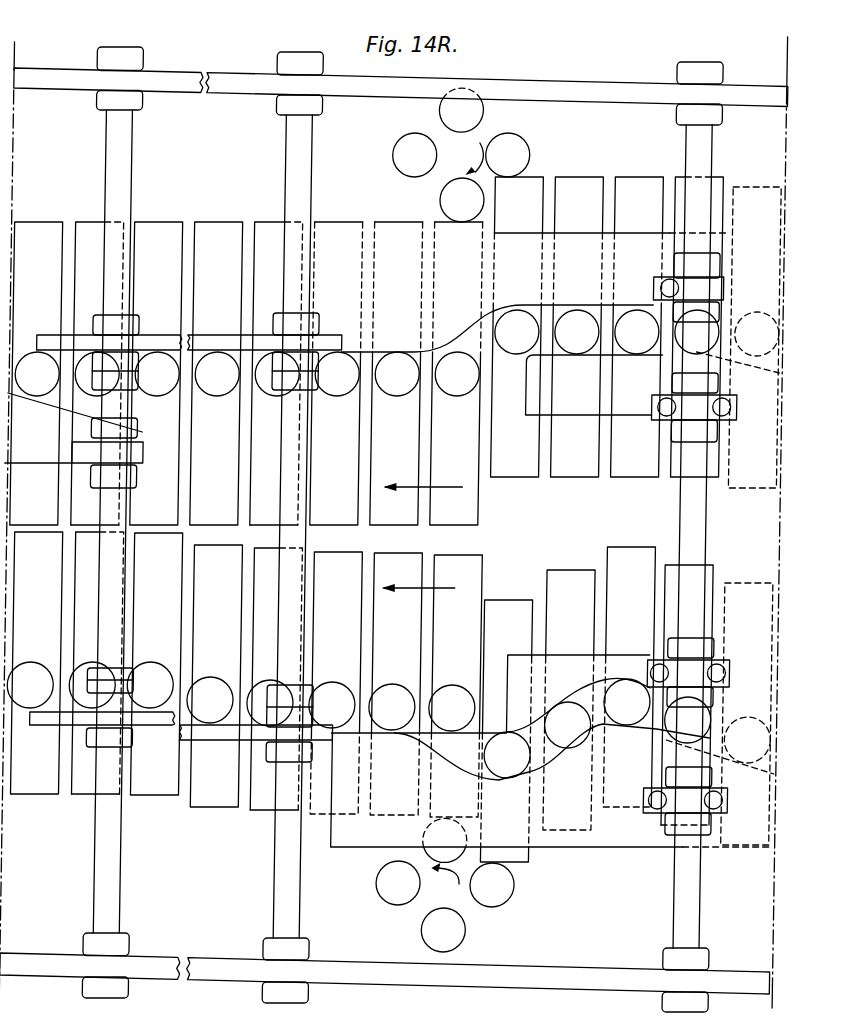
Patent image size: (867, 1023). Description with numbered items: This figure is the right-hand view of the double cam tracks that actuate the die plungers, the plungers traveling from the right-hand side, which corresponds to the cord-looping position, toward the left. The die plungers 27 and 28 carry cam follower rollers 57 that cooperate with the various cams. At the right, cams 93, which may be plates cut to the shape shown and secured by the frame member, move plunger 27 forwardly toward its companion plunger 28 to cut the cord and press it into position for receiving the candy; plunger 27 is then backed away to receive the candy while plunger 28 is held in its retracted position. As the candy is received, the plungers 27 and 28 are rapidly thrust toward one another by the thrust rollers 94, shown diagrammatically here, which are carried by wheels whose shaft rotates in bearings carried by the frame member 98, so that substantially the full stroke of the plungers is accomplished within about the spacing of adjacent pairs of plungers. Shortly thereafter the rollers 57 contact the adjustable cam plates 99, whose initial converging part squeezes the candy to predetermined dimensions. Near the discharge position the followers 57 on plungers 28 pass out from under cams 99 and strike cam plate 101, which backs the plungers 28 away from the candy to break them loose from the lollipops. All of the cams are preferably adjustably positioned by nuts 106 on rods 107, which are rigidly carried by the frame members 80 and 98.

The frame member 98 is at (576, 88).
The frame member 80 is at (245, 967).
The rod 107 is at (299, 157).
The nut 106 is at (305, 683).
The thrust roller 94 is at (507, 145).
The die plunger 28 is at (82, 228).
The die plunger 27 is at (562, 570).
The cam 93 is at (563, 243).
The cam follower roller 57 is at (206, 385).
The adjustable cam plate 99 is at (207, 338).
The cam plate 101 is at (36, 450).